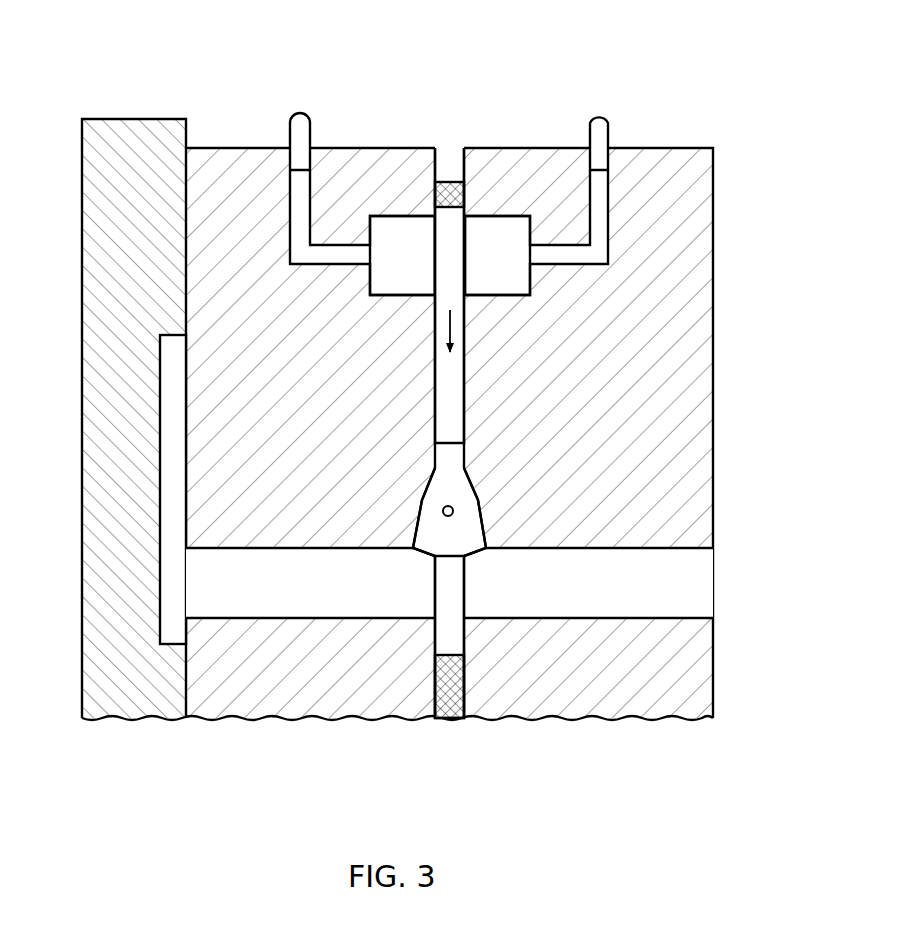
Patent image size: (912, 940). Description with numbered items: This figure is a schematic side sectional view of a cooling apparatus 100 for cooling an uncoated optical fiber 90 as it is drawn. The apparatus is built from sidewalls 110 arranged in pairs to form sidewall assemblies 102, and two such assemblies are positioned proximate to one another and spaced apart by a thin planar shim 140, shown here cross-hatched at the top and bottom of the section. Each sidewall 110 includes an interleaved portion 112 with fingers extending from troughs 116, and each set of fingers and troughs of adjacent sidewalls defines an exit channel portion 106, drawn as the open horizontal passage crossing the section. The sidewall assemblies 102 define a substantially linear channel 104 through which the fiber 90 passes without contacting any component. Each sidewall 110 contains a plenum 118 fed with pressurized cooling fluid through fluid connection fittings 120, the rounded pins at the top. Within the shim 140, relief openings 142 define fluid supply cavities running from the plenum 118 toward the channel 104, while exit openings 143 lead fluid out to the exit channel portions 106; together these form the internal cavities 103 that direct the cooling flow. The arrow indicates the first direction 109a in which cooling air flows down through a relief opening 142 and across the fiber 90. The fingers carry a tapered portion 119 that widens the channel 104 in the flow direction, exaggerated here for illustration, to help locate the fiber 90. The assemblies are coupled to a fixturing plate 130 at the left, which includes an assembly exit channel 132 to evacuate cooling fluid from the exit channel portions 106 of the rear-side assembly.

The cooling apparatus 100 is at (686, 74).
The sidewall assembly 102 is at (446, 406).
The internal cavities 103 is at (469, 425).
The channel 104 is at (436, 596).
The exit channel portion 106 is at (397, 561).
The first direction 109a is at (452, 335).
The sidewall 110 is at (416, 143).
The interleaved portion 112 is at (280, 547).
The trough 116 is at (274, 618).
The plenum 118 is at (385, 216).
The tapered portion 119 is at (418, 530).
The fluid connection fitting 120 is at (459, 178).
The fixturing plate 130 is at (108, 375).
The assembly exit channel 132 is at (182, 633).
The shim 140 is at (450, 178).
The relief opening 142 is at (455, 394).
The exit opening 143 is at (455, 608).
The uncoated optical fiber 90 is at (455, 511).